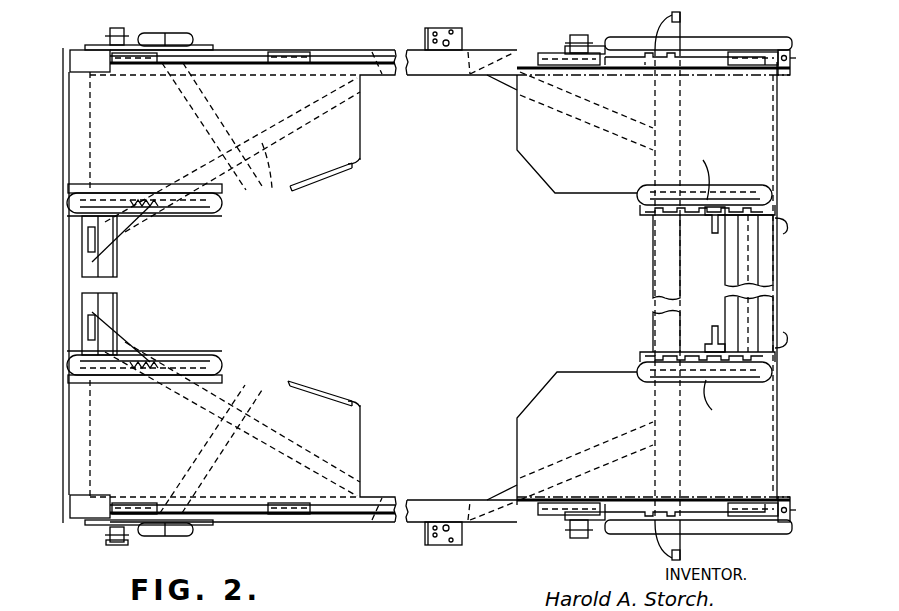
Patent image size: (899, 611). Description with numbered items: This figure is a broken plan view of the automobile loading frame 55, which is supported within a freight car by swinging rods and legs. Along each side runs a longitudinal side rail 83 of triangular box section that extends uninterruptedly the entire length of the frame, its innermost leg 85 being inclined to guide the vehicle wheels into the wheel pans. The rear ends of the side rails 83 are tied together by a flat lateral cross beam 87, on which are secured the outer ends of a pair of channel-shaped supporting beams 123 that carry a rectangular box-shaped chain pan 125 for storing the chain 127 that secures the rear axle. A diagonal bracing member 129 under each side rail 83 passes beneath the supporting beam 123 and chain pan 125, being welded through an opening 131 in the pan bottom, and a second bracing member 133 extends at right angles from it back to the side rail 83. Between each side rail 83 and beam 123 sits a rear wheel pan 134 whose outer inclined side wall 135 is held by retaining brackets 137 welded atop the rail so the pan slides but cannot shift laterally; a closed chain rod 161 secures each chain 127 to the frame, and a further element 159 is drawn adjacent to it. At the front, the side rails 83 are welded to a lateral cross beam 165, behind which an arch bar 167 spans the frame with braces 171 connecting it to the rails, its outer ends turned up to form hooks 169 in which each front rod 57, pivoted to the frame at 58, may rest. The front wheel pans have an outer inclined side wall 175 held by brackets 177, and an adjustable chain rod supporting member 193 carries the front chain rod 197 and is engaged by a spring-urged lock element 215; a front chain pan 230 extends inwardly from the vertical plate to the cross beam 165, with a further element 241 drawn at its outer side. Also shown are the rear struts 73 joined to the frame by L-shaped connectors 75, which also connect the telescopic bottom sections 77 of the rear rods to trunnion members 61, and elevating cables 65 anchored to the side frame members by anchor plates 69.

The loading frame 55 is at (401, 42).
The front rod 57 is at (712, 46).
The pivot connection 58 is at (584, 36).
The trunnion member 61 is at (105, 543).
The elevating cable 65 is at (454, 44).
The anchor plate 69 is at (440, 28).
The rear strut 73 is at (193, 35).
The L-shaped connector member 75 is at (123, 32).
The telescopic bottom section 77 is at (160, 34).
The side rail 83 is at (446, 84).
The inclined inner leg 85 is at (486, 76).
The lateral cross beam 87 is at (63, 157).
The channel-shaped supporting beam 123 is at (193, 214).
The chain pan 125 is at (82, 262).
The chain 127 is at (294, 50).
The bracing member 129 is at (306, 192).
The opening 131 is at (94, 298).
The second bracing member 133 is at (218, 108).
The wheel pan 134 is at (362, 162).
The inclined side wall 135 is at (212, 476).
The retaining bracket 137 is at (115, 49).
The pin 159 is at (150, 211).
The closed chain rod 161 is at (222, 212).
The lateral cross beam 165 is at (773, 458).
The arch bar 167 is at (652, 262).
The hook 169 is at (676, 20).
The brace 171 is at (578, 113).
The outer inclined side wall 175 is at (552, 196).
The bracket 177 is at (548, 53).
The chain rod supporting member 193 is at (713, 278).
The chain rod 197 is at (708, 188).
The lock element 215 is at (712, 233).
The chain pan 230 is at (758, 268).
The clip 241 is at (780, 230).